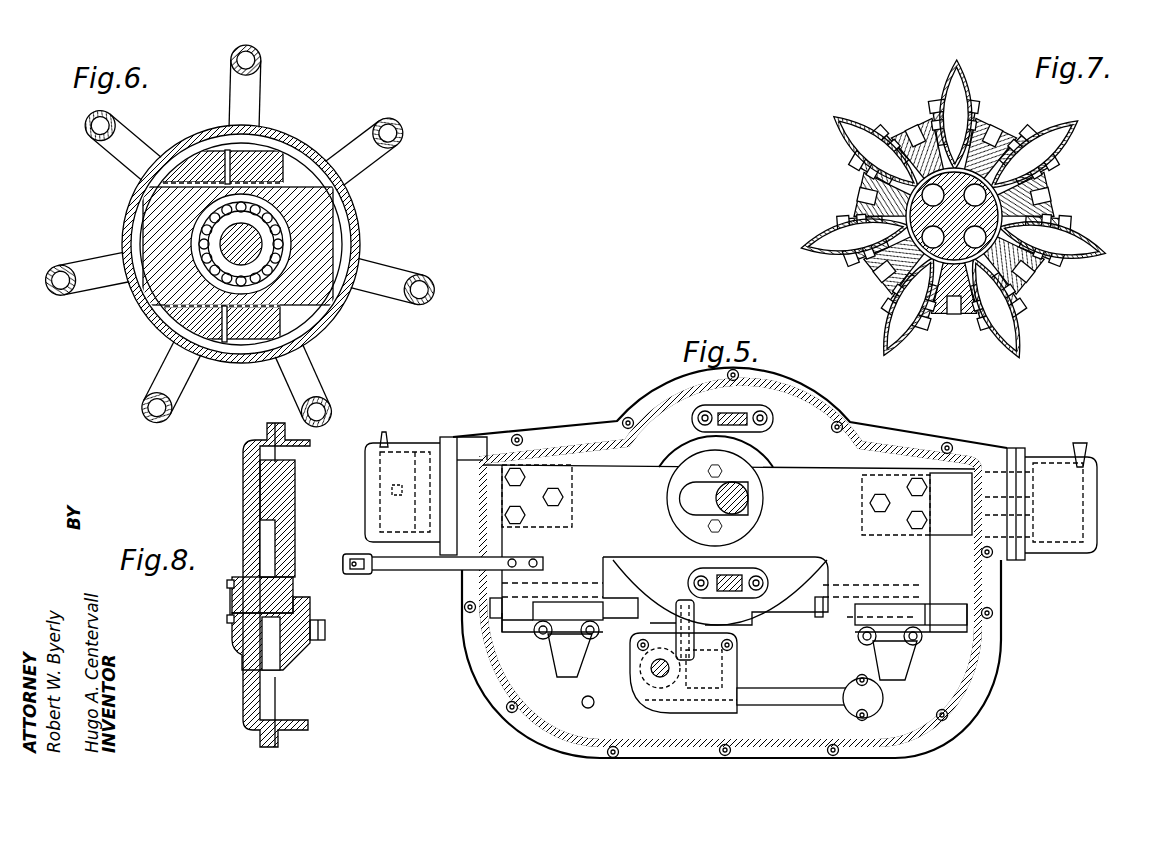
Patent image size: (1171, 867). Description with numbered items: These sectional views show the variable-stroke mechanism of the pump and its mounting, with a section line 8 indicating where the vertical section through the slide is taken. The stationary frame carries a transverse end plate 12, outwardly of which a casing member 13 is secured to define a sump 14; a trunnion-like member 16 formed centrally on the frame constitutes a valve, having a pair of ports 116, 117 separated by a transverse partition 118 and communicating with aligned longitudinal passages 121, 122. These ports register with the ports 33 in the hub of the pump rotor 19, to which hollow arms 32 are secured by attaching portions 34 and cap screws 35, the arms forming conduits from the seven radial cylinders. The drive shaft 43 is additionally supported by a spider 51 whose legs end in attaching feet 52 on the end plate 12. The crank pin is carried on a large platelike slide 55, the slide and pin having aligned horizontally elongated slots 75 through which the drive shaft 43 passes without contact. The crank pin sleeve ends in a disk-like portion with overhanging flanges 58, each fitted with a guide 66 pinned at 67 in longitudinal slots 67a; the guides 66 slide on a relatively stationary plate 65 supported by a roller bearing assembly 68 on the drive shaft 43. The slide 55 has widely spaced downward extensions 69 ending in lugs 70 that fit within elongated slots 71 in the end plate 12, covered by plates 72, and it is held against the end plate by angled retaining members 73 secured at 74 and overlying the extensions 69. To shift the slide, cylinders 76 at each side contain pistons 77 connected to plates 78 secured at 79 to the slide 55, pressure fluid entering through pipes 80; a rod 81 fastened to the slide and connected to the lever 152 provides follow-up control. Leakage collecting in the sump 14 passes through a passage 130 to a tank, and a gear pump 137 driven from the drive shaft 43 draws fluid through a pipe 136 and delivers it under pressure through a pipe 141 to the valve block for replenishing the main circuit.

In FIG. 5, the section line 8 is at (570, 460).
In FIG. 5, the transverse end plate 12 is at (507, 627).
In FIG. 8, the transverse end plate 12 is at (242, 647).
In FIG. 5, the casing member 13 is at (500, 675).
In FIG. 5, the sump 14 is at (913, 683).
In FIG. 7, the trunnion-like member 16 is at (990, 213).
In FIG. 6, the rotor 19 is at (318, 340).
In FIG. 6, the hollow arms 32 is at (258, 89).
In FIG. 7, the hollow arms 32 is at (973, 83).
In FIG. 7, the ports 33 is at (935, 142).
In FIG. 7, the attaching portions 34 is at (993, 117).
In FIG. 7, the cap screws 35 is at (842, 212).
In FIG. 5, the drive shaft 43 is at (748, 498).
In FIG. 5, the spider 51 is at (735, 420).
In FIG. 5, the attaching feet 52 is at (760, 430).
In FIG. 5, the slide 55 is at (729, 503).
In FIG. 8, the slide 55 is at (295, 531).
In FIG. 6, the overhanging flanges 58 is at (200, 157).
In FIG. 6, the relatively stationary plate 65 is at (333, 250).
In FIG. 6, the guides 66 is at (273, 183).
In FIG. 6, the pins 67 is at (230, 152).
In FIG. 6, the longitudinal slots 67a is at (262, 178).
In FIG. 6, the roller bearing assembly 68 is at (275, 240).
In FIG. 5, the downward extensions 69 is at (705, 589).
In FIG. 8, the downward extensions 69 is at (293, 581).
In FIG. 8, the lugs or feet 70 is at (232, 598).
In FIG. 5, the elongated slots 71 is at (628, 610).
In FIG. 8, the elongated slots 71 is at (243, 582).
In FIG. 8, the plates 72 is at (232, 620).
In FIG. 5, the angled retaining members 73 is at (558, 655).
In FIG. 5, the securing means 74 is at (590, 640).
In FIG. 8, the securing means 74 is at (325, 628).
In FIG. 5, the horizontally elongated slots 75 is at (692, 497).
In FIG. 8, the horizontally elongated slots 75 is at (283, 653).
In FIG. 5, the cylinders 76 is at (370, 476).
In FIG. 5, the pistons 77 is at (421, 462).
In FIG. 5, the plates 78 is at (489, 470).
In FIG. 5, the securing points 79 is at (518, 483).
In FIG. 5, the fluid pressure conducting pipes 80 is at (386, 434).
In FIG. 5, the rod 81 is at (428, 571).
In FIG. 7, the port 116 is at (1008, 125).
In FIG. 7, the port 117 is at (1017, 313).
In FIG. 7, the transverse partition 118 is at (1047, 197).
In FIG. 7, the passages 121 is at (960, 194).
In FIG. 7, the passages 122 is at (960, 236).
In FIG. 5, the passage 130 is at (583, 706).
In FIG. 5, the pipe 136 is at (828, 682).
In FIG. 5, the pump 137 is at (648, 692).
In FIG. 5, the pipe 141 is at (778, 602).
In FIG. 5, the lever 152 is at (353, 574).